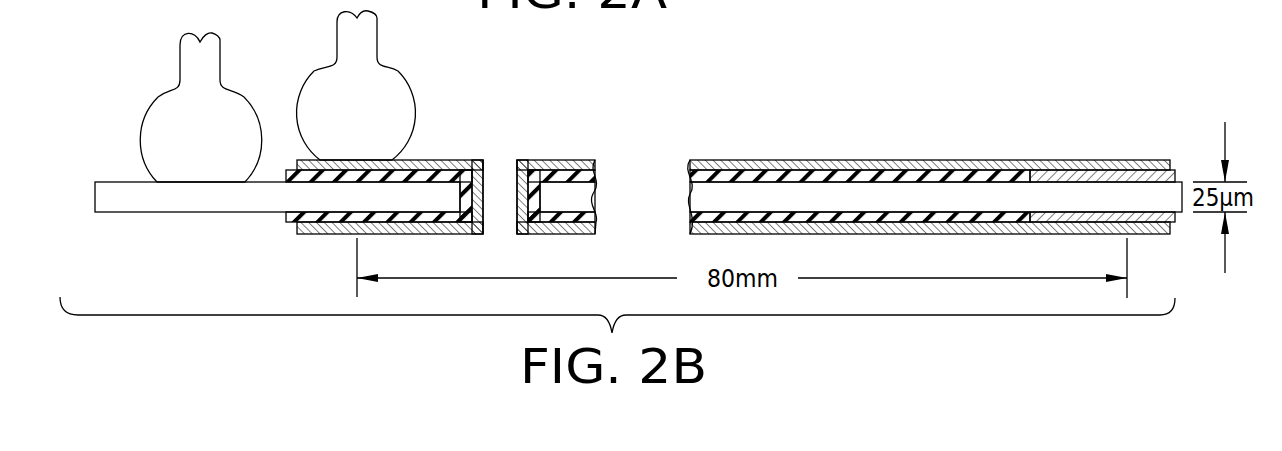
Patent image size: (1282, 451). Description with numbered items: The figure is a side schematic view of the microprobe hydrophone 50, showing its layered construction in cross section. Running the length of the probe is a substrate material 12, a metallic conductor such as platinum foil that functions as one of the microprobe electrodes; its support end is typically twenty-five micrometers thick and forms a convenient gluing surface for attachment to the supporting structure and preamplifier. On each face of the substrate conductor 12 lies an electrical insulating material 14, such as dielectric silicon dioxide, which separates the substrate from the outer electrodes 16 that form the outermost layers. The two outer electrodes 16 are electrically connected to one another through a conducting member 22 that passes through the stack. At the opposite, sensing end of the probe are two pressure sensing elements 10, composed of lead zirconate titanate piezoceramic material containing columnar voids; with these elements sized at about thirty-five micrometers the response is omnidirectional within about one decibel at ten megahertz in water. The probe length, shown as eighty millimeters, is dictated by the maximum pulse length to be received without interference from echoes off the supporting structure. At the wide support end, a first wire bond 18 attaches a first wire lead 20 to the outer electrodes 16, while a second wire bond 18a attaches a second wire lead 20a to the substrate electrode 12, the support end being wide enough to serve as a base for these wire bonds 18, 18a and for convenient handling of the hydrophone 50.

The pressure sensing element 10 is at (1074, 175).
The substrate material 12 is at (121, 205).
The electrical insulating material 14 is at (288, 222).
The outer electrode 16 is at (462, 158).
The first wire bond 18 is at (400, 76).
The second wire bond 18a is at (163, 107).
The first wire lead 20 is at (337, 60).
The second wire lead 20a is at (180, 70).
The conducting member 22 is at (498, 227).
The microprobe hydrophone 50 is at (258, 252).